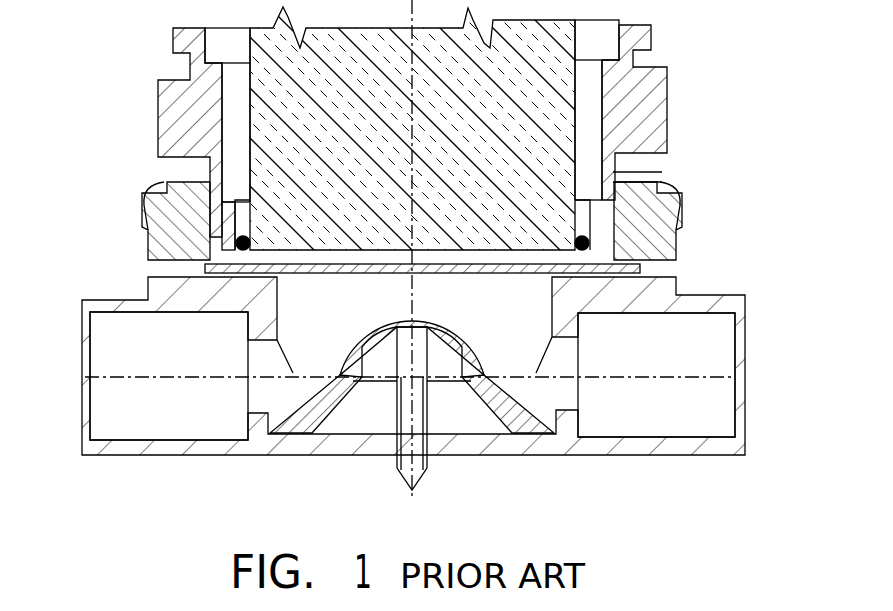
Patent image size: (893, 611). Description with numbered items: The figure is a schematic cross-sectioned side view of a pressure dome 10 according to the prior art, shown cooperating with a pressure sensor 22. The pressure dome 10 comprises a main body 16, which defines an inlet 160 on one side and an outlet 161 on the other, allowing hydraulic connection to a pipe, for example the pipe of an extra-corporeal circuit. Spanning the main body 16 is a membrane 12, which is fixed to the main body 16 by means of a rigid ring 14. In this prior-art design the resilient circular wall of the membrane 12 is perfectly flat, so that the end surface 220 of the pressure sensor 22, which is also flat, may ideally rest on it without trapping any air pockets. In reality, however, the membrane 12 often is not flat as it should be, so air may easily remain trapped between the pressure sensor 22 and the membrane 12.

The pressure dome 10 is at (128, 299).
The membrane 12 is at (513, 427).
The rigid ring 14 is at (642, 220).
The main body 16 is at (323, 405).
The pressure sensor 22 is at (620, 172).
The inlet 160 is at (132, 390).
The outlet 161 is at (697, 368).
The end surface 220 is at (545, 315).